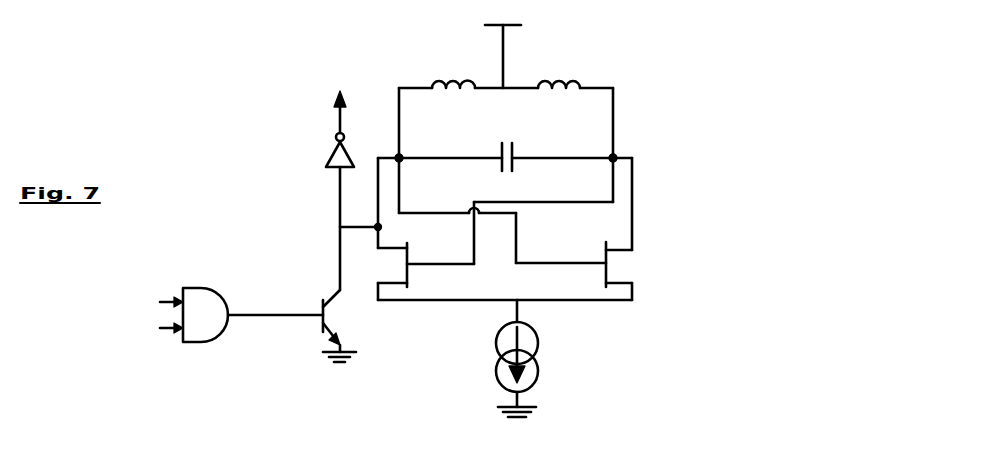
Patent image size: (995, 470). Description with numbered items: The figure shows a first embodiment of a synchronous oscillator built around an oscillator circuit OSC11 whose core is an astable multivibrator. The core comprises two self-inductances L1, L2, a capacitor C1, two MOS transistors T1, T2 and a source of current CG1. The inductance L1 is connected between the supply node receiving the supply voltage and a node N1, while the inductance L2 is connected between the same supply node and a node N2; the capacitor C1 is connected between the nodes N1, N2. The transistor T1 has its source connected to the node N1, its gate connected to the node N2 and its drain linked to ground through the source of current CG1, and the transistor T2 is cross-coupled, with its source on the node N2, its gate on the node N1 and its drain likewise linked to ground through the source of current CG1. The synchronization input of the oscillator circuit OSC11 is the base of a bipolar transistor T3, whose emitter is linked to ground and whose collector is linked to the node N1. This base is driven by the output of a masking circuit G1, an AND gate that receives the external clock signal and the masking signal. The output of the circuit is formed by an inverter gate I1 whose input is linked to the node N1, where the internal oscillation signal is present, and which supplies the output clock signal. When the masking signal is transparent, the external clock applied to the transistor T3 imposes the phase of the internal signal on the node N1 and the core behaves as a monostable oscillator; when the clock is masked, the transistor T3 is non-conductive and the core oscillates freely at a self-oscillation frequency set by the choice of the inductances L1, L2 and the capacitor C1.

The oscillator circuit OSC11 is at (246, 102).
The inverter gate I1 is at (330, 156).
The self-inductance L1 is at (450, 76).
The self-inductance L2 is at (560, 77).
The capacitor C1 is at (514, 148).
The node N1 is at (401, 156).
The node N2 is at (615, 156).
The MOS transistor T1 is at (407, 247).
The MOS transistor T2 is at (606, 248).
The bipolar transistor T3 is at (330, 316).
The masking circuit G1 is at (217, 325).
The source of current CG1 is at (538, 358).